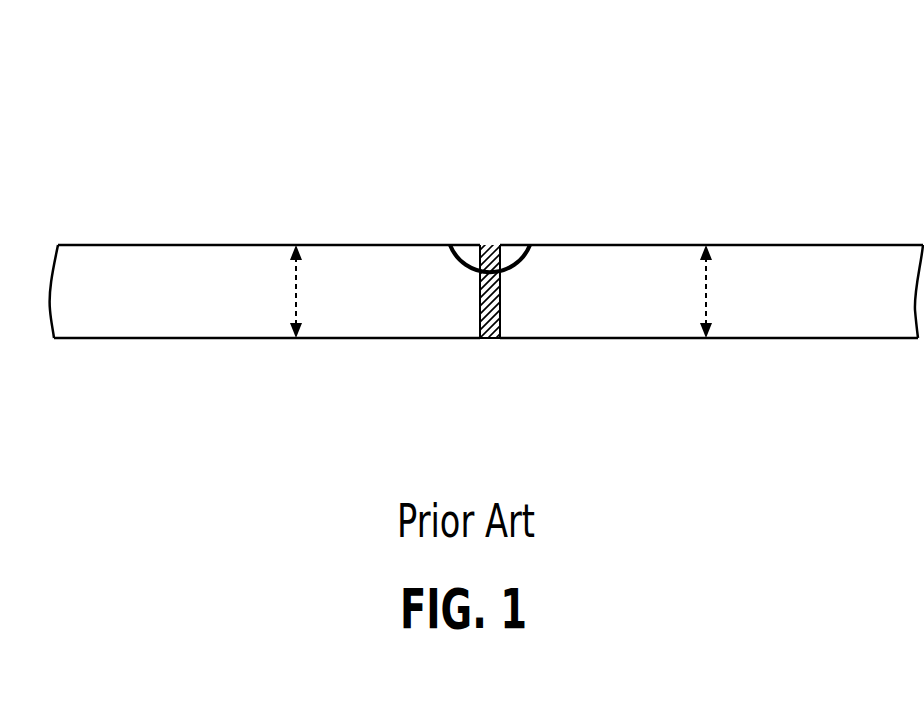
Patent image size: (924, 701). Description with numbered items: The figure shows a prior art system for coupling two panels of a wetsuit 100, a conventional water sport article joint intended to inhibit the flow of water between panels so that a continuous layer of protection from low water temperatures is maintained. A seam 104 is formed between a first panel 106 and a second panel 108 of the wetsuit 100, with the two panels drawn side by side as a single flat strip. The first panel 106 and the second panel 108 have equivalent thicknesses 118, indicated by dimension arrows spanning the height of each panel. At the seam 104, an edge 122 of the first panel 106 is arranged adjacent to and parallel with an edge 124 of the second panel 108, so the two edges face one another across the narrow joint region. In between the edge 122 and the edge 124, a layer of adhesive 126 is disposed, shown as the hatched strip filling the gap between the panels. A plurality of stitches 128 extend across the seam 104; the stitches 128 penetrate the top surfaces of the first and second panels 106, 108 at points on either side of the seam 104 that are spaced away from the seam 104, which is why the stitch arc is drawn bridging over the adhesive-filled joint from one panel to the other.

The wetsuit 100 is at (486, 208).
The seam 104 is at (479, 241).
The first panel 106 is at (155, 306).
The second panel 108 is at (860, 306).
The thickness 118 is at (295, 295).
The edge of the first panel 122 is at (480, 308).
The edge of the second panel 124 is at (500, 322).
The layer of adhesive 126 is at (489, 334).
The stitches 128 is at (452, 251).